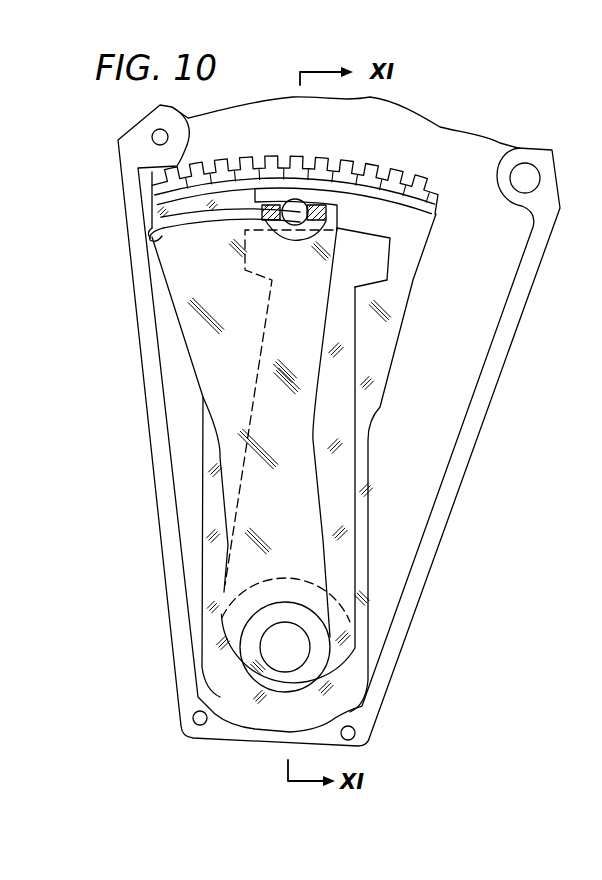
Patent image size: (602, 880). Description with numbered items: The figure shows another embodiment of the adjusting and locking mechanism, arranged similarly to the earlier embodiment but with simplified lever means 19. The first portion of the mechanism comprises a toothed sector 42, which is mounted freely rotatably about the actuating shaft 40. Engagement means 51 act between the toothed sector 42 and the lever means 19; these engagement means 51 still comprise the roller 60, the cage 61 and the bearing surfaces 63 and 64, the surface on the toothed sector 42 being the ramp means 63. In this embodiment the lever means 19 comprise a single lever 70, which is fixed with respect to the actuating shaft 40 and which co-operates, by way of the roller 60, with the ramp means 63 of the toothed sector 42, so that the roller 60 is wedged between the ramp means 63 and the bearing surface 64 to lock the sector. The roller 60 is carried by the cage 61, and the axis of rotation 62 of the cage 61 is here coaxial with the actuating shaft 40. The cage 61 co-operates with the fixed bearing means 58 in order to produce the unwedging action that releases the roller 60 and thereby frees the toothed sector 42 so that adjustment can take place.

The lever means 19 is at (370, 412).
The actuating shaft 40 is at (250, 655).
The toothed sector 42 is at (442, 186).
The engagement means 51 is at (352, 206).
The fixed bearing means 58 is at (151, 236).
The roller 60 is at (297, 226).
The cage 61 is at (196, 227).
The axis of rotation 62 is at (259, 640).
The ramp means 63 is at (319, 201).
The bearing surface 64 is at (368, 230).
The single lever 70 is at (358, 374).